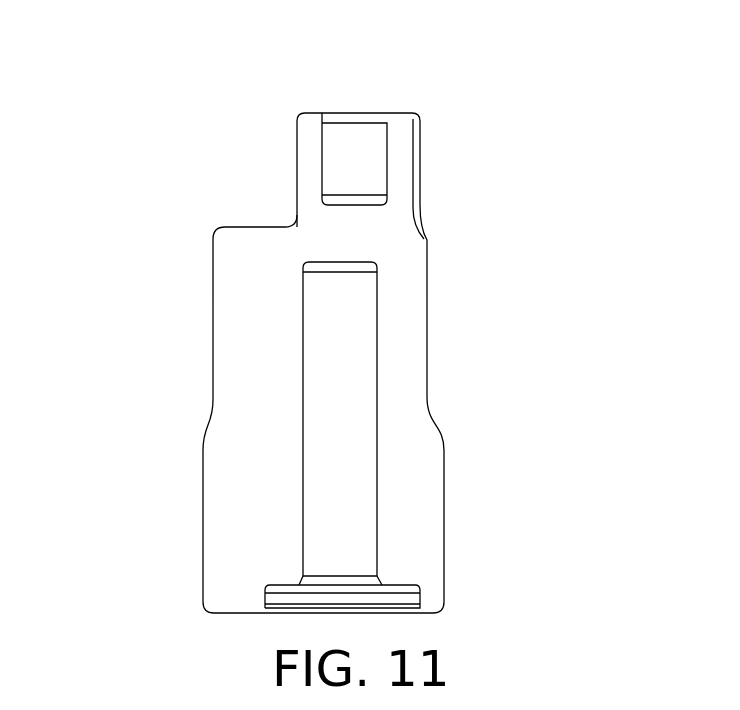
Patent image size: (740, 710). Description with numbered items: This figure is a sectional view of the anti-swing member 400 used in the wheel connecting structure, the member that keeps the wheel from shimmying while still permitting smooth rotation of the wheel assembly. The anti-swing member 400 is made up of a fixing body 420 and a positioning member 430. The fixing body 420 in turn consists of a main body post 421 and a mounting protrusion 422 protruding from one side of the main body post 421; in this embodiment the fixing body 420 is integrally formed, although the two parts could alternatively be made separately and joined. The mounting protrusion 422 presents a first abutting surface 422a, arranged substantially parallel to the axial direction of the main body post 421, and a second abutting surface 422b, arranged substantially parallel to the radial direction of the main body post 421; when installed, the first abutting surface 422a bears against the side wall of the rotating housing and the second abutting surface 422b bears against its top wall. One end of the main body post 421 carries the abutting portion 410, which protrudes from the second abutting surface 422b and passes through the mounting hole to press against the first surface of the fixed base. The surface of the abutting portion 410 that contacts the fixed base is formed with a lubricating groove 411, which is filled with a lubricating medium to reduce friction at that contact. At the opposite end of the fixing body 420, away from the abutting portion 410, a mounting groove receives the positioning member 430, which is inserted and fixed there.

The anti-swing member 400 is at (344, 312).
The abutting portion 410 is at (419, 176).
The lubricating groove 411 is at (352, 148).
The fixing body 420 is at (344, 332).
The main body post 421 is at (311, 226).
The mounting protrusion 422 is at (298, 463).
The first abutting surface 422a is at (212, 392).
The second abutting surface 422b is at (262, 226).
The positioning member 430 is at (340, 490).